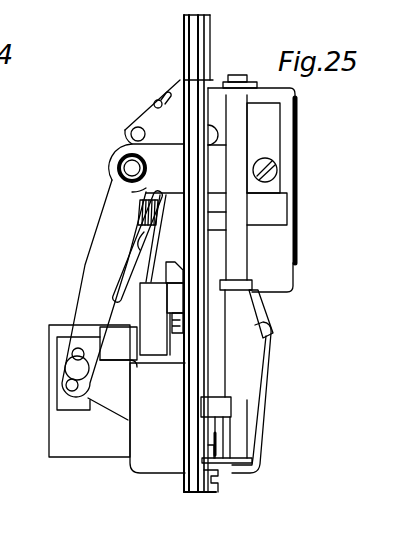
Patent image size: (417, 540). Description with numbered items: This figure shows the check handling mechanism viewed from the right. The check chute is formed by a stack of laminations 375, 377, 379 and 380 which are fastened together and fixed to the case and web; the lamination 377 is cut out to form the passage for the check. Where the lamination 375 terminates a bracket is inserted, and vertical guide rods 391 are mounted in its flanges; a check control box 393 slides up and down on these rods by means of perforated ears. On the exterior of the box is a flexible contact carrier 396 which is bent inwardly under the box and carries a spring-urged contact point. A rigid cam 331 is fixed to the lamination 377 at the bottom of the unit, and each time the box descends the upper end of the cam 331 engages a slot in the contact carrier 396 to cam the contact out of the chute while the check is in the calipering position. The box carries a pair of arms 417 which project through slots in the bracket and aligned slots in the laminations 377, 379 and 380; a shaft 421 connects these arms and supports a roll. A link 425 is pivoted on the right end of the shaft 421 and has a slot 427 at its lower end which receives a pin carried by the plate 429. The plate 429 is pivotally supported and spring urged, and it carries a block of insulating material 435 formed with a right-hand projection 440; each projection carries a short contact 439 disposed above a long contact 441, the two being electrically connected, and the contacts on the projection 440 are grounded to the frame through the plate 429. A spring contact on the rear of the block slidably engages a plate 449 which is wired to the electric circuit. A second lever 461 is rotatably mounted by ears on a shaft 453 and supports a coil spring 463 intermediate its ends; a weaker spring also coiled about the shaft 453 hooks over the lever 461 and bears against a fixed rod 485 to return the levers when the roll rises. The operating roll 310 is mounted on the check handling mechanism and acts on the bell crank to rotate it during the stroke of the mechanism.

The lamination 375 is at (212, 56).
The lamination 377 is at (200, 40).
The lamination 379 is at (184, 29).
The lamination 380 is at (190, 47).
The fixed rod 485 is at (156, 97).
The shaft 453 is at (132, 128).
The arms 417 is at (165, 171).
The shaft 421 is at (117, 167).
The operating roll 310 is at (120, 178).
The link 425 is at (92, 268).
The second lever 461 is at (116, 299).
The coil spring 463 is at (137, 245).
The right-hand projection 440 is at (176, 300).
The short contact 439 is at (137, 343).
The long contact 441 is at (182, 301).
The block of insulating material 435 is at (135, 463).
The plate 429 is at (110, 400).
The plate 449 is at (62, 412).
The slot 427 is at (70, 384).
The vertical guide rods 391 is at (238, 121).
The check control box 393 is at (300, 144).
The flexible contact carrier 396 is at (299, 201).
The rigid cam 331 is at (278, 379).